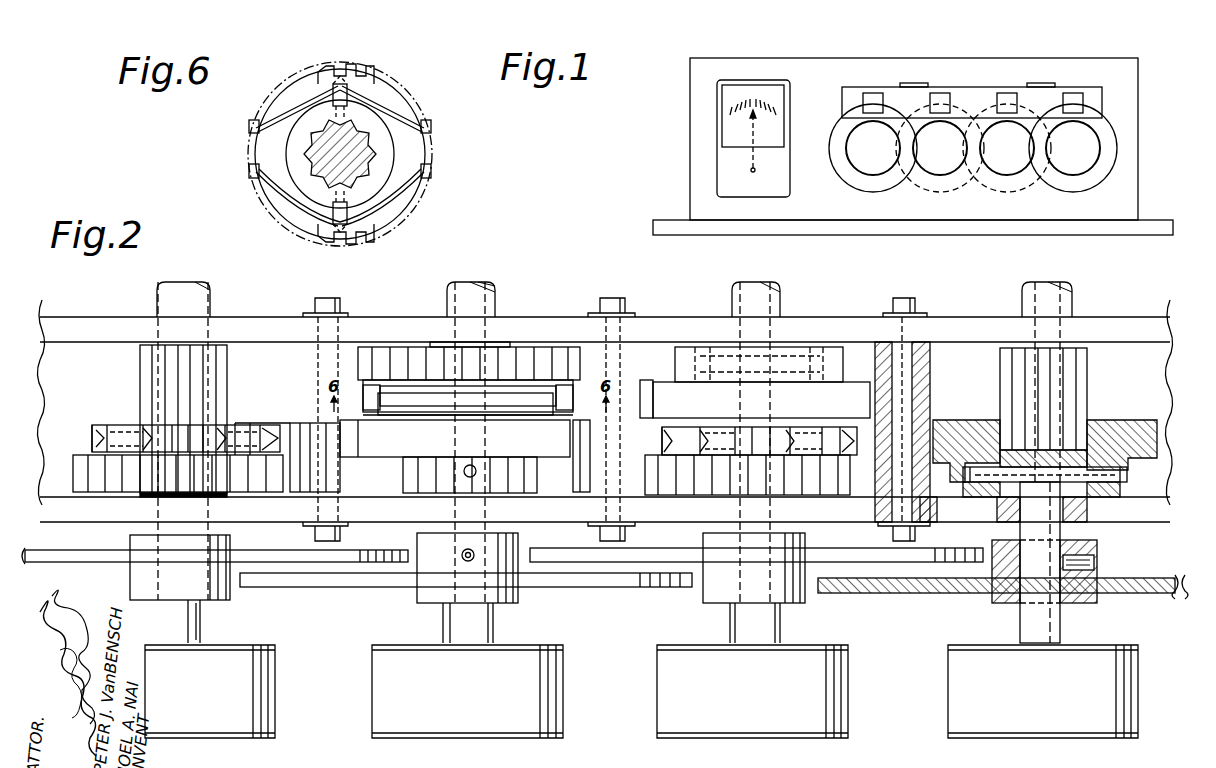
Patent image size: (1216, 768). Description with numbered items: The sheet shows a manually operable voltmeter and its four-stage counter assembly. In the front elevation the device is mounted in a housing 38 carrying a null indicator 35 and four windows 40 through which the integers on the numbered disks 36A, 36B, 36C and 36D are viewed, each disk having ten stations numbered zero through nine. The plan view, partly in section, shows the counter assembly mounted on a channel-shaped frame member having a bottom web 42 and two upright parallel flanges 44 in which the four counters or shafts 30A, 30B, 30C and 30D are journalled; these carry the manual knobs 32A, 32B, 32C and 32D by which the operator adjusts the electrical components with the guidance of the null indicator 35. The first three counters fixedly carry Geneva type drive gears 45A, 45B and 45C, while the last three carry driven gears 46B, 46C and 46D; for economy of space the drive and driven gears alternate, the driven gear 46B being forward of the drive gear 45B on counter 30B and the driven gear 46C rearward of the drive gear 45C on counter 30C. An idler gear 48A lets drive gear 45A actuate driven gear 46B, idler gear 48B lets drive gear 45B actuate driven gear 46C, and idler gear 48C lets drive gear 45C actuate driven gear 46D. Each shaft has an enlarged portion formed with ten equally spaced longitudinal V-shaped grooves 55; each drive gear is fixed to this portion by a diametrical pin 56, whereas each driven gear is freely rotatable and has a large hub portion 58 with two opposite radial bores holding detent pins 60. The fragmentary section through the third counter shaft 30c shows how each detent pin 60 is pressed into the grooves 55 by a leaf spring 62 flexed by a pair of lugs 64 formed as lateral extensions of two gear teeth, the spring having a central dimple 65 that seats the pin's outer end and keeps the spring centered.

In FIG. 6, the counter shaft 30c is at (375, 148).
In FIG. 2, the first counter 30A is at (1063, 628).
In FIG. 2, the second counter 30B is at (782, 628).
In FIG. 2, the third counter 30C is at (498, 628).
In FIG. 2, the fourth counter 30D is at (204, 628).
In FIG. 1, the manual knob 32A is at (1070, 168).
In FIG. 2, the manual knob 32A is at (1055, 704).
In FIG. 1, the manual knob 32B is at (1003, 168).
In FIG. 2, the manual knob 32B is at (760, 704).
In FIG. 1, the manual knob 32C is at (935, 168).
In FIG. 2, the manual knob 32C is at (480, 704).
In FIG. 1, the manual knob 32D is at (865, 168).
In FIG. 2, the manual knob 32D is at (198, 704).
In FIG. 1, the null indicator 35 is at (790, 116).
In FIG. 2, the numbered disk 36A is at (960, 590).
In FIG. 2, the numbered disk 36B is at (980, 558).
In FIG. 2, the numbered disk 36C is at (608, 588).
In FIG. 2, the numbered disk 36D is at (400, 555).
In FIG. 1, the housing 38 is at (688, 162).
In FIG. 1, the window 40 is at (868, 92).
In FIG. 2, the bottom web 42 is at (58, 352).
In FIG. 2, the upright flange 44 is at (650, 330).
In FIG. 2, the drive gear 45A is at (950, 430).
In FIG. 2, the drive gear 45B is at (820, 410).
In FIG. 2, the drive gear 45C is at (556, 450).
In FIG. 2, the driven gear 46B is at (830, 480).
In FIG. 2, the driven gear 46C is at (500, 358).
In FIG. 2, the driven gear 46D is at (252, 480).
In FIG. 2, the idler gear 48A is at (940, 470).
In FIG. 2, the idler gear 48B is at (599, 456).
In FIG. 2, the idler gear 48C is at (318, 432).
In FIG. 2, the longitudinal V-shaped groove 55 is at (212, 362).
In FIG. 2, the diametrical pin 56 is at (478, 468).
In FIG. 2, the hub portion 58 is at (255, 428).
In FIG. 6, the detent pin 60 is at (347, 86).
In FIG. 2, the detent pin 60 is at (110, 428).
In FIG. 6, the leaf spring 62 is at (392, 116).
In FIG. 2, the leaf spring 62 is at (98, 428).
In FIG. 6, the lug 64 is at (254, 118).
In FIG. 2, the lug 64 is at (170, 430).
In FIG. 6, the central dimple 65 is at (340, 62).
In FIG. 2, the central dimple 65 is at (92, 440).